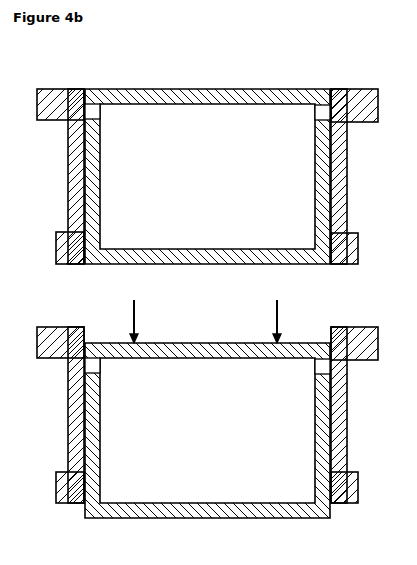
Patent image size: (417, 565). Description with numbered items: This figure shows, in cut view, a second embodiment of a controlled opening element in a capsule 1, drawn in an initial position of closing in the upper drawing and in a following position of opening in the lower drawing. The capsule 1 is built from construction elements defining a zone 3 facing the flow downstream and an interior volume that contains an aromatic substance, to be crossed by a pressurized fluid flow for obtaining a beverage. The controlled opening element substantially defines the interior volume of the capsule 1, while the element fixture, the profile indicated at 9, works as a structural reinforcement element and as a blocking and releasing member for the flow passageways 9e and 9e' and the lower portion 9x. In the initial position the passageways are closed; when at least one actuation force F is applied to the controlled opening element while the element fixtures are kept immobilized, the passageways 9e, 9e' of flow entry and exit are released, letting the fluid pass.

The capsule 1 is at (201, 289).
The zone of capsule facing the flow downstream 3 is at (207, 296).
The mounting profile 9 is at (355, 288).
The passageway of flow entry 9e is at (98, 296).
The passageway of flow entry 9e' is at (60, 234).
The profile foot flange 9x is at (91, 367).
The actuation force F is at (215, 321).